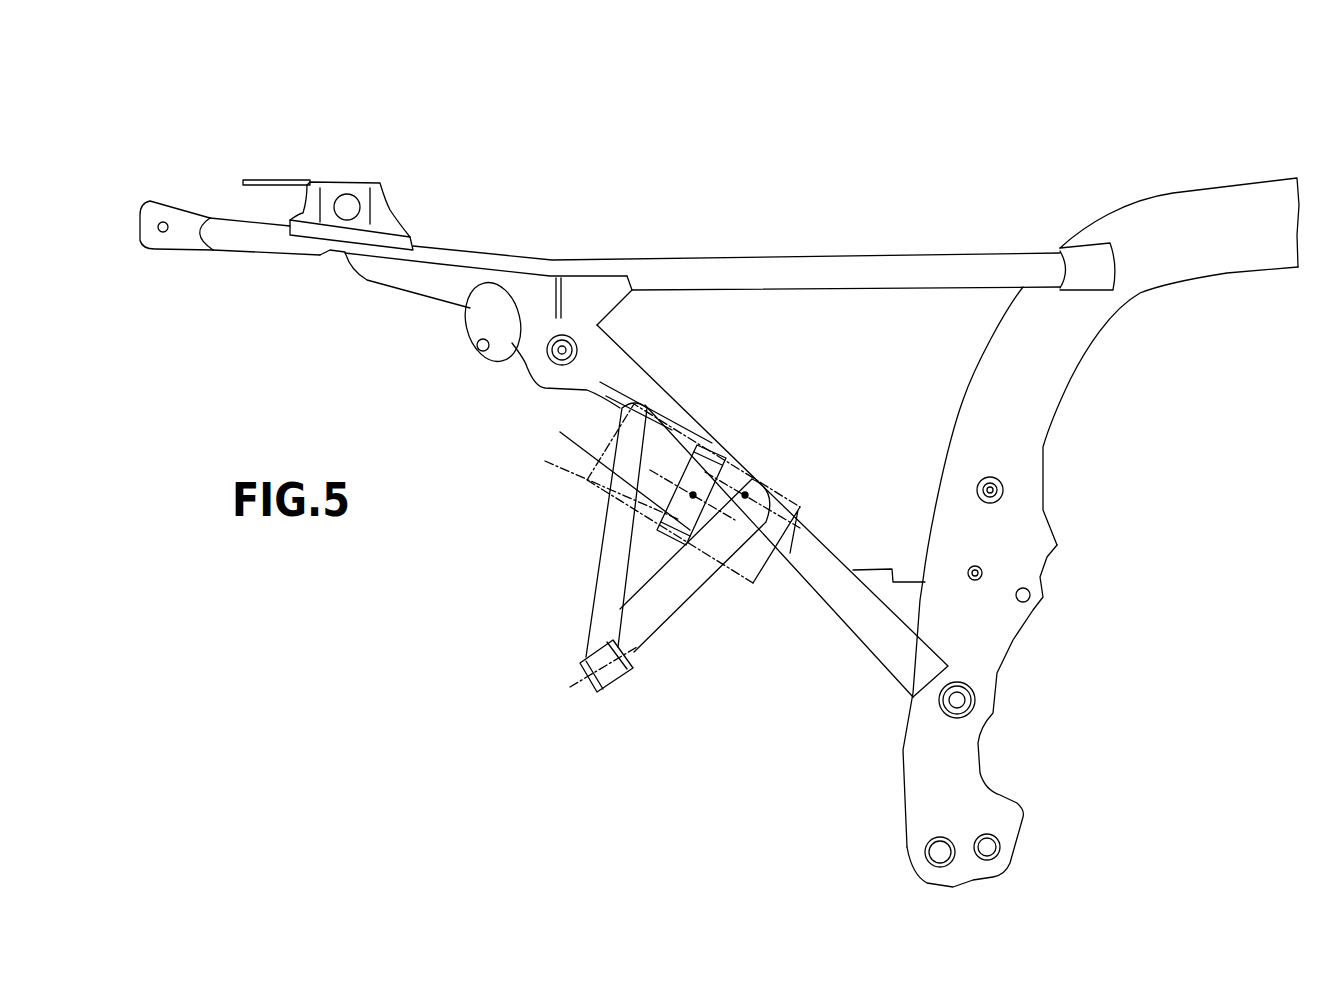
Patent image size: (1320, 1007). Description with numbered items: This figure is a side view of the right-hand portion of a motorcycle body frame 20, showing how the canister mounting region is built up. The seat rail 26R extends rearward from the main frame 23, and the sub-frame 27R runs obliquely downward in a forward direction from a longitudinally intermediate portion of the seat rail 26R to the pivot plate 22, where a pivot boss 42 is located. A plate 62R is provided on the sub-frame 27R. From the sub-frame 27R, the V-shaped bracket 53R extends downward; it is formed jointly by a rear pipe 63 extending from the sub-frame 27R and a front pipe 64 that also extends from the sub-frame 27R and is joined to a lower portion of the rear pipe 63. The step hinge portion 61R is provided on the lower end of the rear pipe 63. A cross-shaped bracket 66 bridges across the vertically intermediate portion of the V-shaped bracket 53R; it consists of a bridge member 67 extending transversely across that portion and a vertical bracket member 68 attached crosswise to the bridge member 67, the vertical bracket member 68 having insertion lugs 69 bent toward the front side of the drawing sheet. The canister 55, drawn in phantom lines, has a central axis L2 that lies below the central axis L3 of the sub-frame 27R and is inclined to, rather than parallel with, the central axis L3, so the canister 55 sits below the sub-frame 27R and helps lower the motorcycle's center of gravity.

The body frame 20 is at (1118, 358).
The pivot plate 22 is at (1000, 653).
The main frame 23 is at (1212, 203).
The seat rail 26R is at (784, 264).
The sub-frame 27R is at (840, 613).
The pivot boss 42 is at (957, 700).
The V-shaped bracket 53R is at (608, 583).
The canister 55 is at (545, 461).
The step hinge portion 61R is at (583, 690).
The plate 62R is at (563, 300).
The rear pipe 63 is at (593, 605).
The front pipe 64 is at (673, 603).
The cross-shaped bracket 66 is at (655, 507).
The bridge member 67 is at (663, 458).
The vertical bracket member 68 is at (707, 555).
The insertion lugs 69 is at (727, 452).
The central axis of the canister L2 is at (693, 492).
The central axis of the sub-frame L3 is at (745, 495).